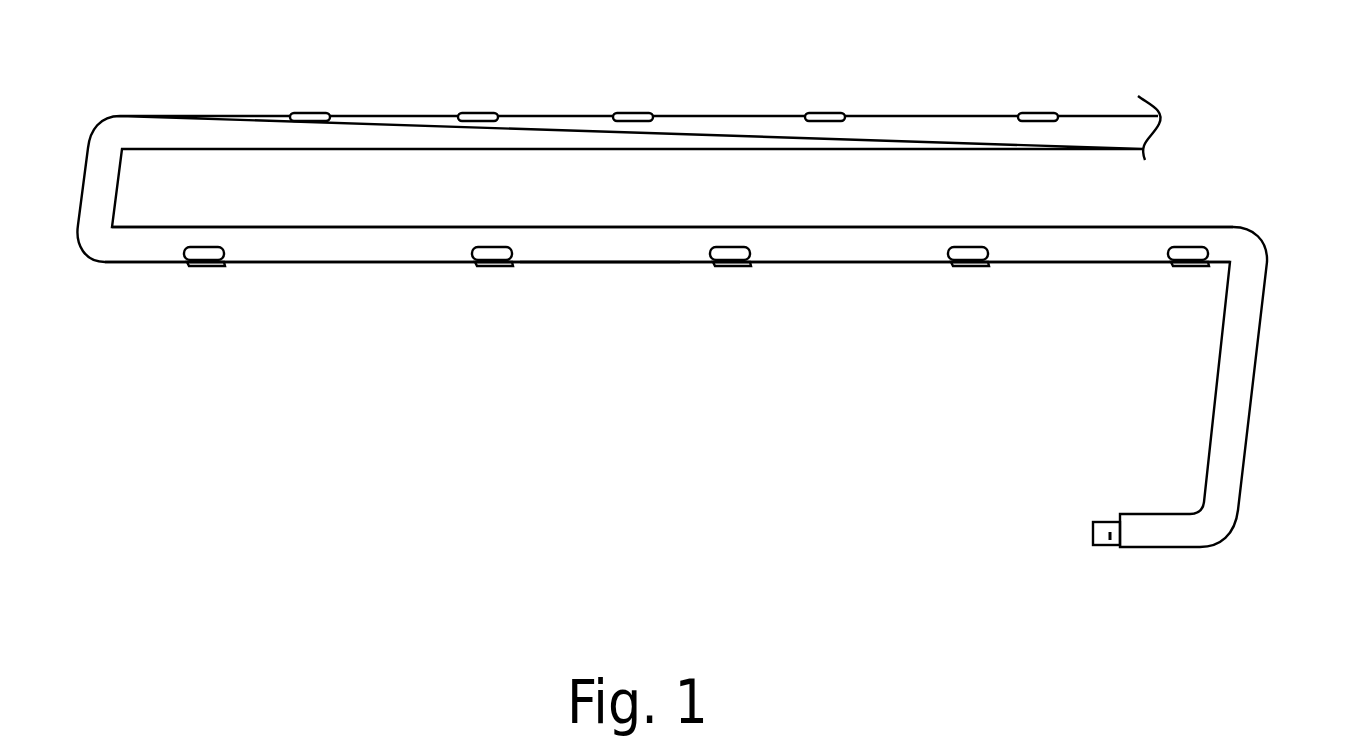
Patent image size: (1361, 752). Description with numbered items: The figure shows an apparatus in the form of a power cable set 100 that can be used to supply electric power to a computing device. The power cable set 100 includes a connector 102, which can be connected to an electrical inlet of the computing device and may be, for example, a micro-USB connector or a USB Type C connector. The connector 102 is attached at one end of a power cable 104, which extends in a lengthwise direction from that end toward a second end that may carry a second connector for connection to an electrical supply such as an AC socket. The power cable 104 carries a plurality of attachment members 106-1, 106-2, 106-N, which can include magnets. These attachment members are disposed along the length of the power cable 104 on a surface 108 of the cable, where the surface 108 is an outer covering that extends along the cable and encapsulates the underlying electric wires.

The power cable set 100 is at (1208, 587).
The connector 102 is at (1095, 522).
The power cable 104 is at (405, 300).
The attachment member 106-1 is at (1176, 284).
The attachment member 106-2 is at (938, 287).
The attachment member 106-N is at (1027, 97).
The surface 108 is at (595, 262).